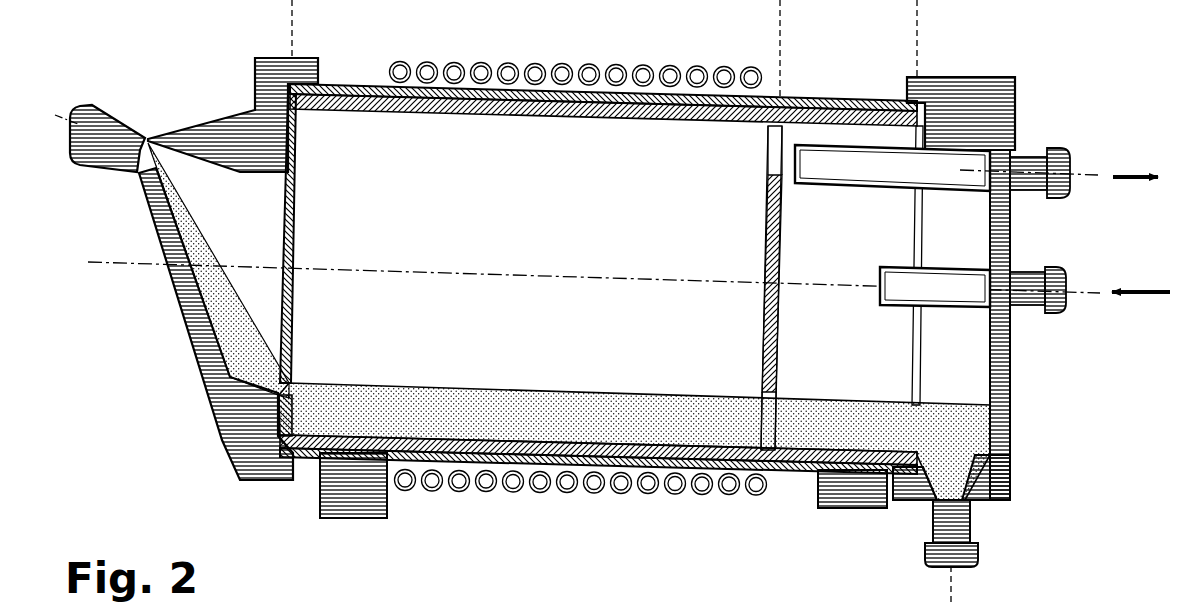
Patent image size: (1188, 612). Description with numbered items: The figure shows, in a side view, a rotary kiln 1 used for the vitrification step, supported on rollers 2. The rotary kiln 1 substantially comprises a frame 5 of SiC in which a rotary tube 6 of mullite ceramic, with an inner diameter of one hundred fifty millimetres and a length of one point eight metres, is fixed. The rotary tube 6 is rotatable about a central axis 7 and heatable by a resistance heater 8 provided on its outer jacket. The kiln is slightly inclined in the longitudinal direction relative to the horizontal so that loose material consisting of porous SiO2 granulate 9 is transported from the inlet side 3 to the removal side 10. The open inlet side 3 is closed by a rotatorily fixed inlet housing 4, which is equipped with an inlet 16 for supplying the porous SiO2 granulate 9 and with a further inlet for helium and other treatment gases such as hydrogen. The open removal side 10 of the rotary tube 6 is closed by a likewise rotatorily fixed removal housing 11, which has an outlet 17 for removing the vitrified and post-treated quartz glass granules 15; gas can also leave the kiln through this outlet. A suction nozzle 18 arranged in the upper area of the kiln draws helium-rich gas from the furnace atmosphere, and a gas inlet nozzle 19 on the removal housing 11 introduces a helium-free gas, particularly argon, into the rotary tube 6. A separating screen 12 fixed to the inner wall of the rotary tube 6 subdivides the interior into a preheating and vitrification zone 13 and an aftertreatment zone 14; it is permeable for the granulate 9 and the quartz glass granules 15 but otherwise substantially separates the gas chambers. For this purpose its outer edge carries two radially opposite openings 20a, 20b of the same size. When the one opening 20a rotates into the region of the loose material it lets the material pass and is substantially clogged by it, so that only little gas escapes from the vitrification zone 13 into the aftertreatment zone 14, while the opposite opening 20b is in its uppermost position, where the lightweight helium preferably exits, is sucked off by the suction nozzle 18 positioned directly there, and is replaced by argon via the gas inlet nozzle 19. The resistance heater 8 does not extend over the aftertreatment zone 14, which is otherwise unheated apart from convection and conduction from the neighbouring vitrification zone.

The rotary kiln 1 is at (945, 72).
The rollers 2 is at (358, 497).
The inlet side 3 is at (280, 243).
The inlet housing 4 is at (193, 347).
The frame 5 is at (420, 462).
The rotary tube 6 is at (643, 480).
The central axis 7 is at (113, 264).
The resistance heater 8 is at (543, 480).
The porous SiO2 granulate 9 is at (441, 386).
The removal side 10 is at (917, 248).
The removal housing 11 is at (1007, 392).
The separating screen 12 is at (760, 203).
The preheating and vitrification zone 13 is at (328, 160).
The aftertreatment zone 14 is at (858, 228).
The quartz glass granules 15 is at (723, 395).
The inlet 16 is at (133, 130).
The outlet 17 is at (970, 532).
The suction nozzle 18 is at (1047, 150).
The gas inlet nozzle 19 is at (1052, 320).
The opening 20a is at (767, 400).
The opening 20b is at (786, 140).